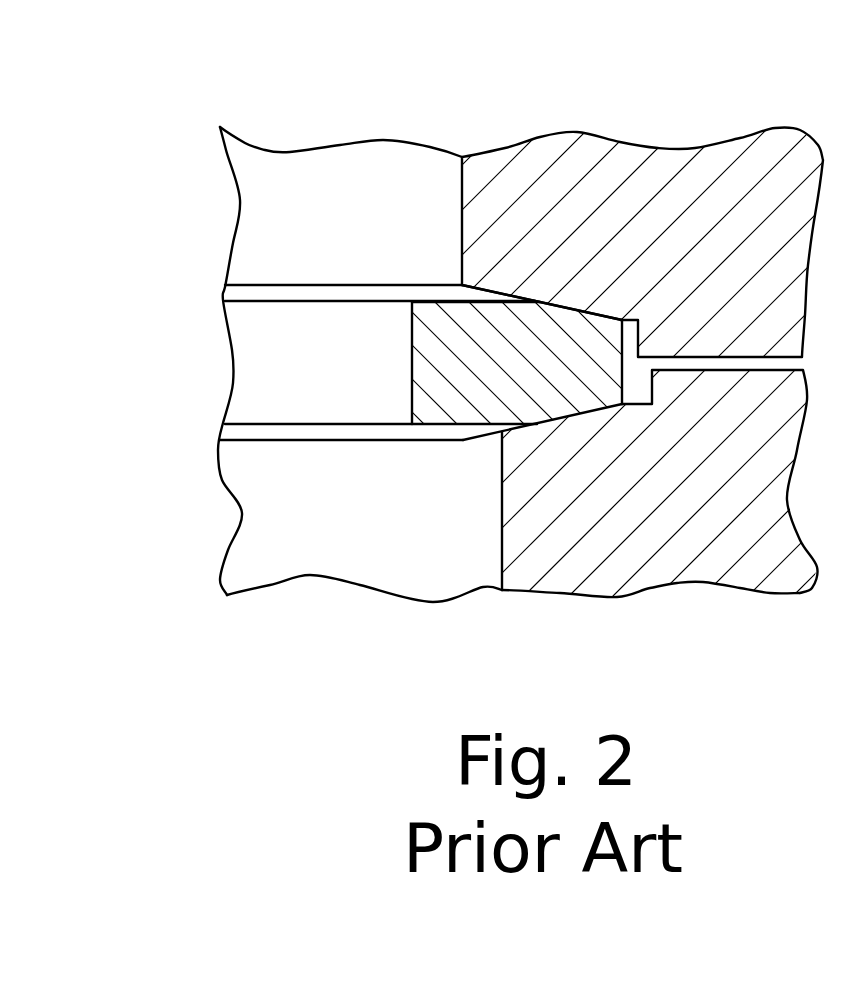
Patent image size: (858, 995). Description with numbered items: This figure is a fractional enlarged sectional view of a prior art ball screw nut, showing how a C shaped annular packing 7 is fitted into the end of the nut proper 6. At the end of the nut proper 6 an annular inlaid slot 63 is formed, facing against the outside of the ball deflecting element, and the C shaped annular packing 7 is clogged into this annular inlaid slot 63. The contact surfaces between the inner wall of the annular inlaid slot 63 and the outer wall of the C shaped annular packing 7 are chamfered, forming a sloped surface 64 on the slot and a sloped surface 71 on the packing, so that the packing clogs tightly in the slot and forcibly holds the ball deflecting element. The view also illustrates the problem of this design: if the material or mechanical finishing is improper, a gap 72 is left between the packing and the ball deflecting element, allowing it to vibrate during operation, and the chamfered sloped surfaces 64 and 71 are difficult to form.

The nut proper 6 is at (533, 160).
The annular inlaid slot 63 is at (357, 287).
The sloped surface 64 is at (570, 312).
The C shaped annular packing 7 is at (337, 349).
The sloped surface 71 is at (538, 423).
The gap 72 is at (255, 292).